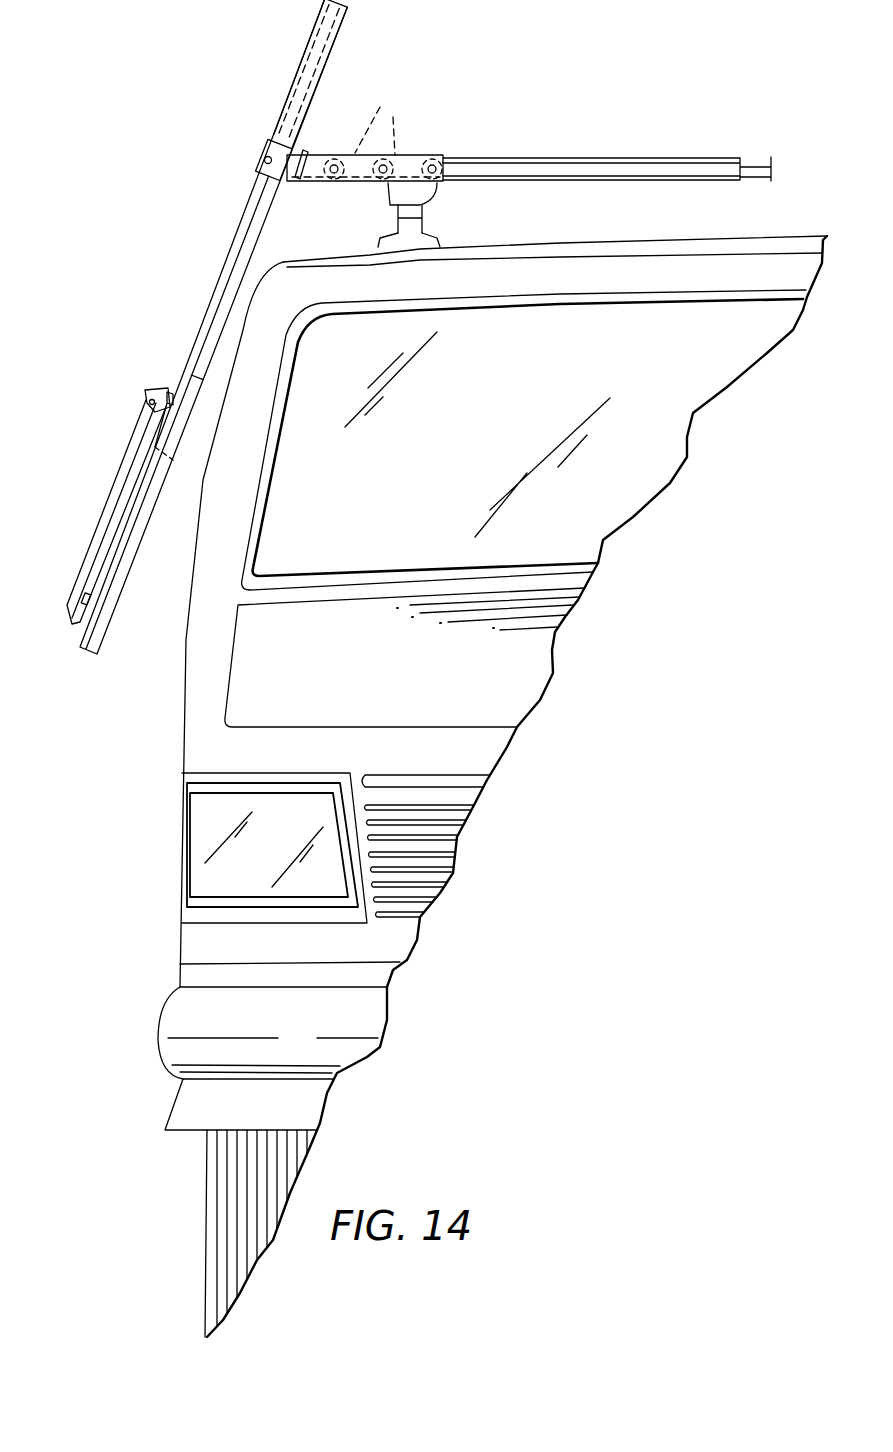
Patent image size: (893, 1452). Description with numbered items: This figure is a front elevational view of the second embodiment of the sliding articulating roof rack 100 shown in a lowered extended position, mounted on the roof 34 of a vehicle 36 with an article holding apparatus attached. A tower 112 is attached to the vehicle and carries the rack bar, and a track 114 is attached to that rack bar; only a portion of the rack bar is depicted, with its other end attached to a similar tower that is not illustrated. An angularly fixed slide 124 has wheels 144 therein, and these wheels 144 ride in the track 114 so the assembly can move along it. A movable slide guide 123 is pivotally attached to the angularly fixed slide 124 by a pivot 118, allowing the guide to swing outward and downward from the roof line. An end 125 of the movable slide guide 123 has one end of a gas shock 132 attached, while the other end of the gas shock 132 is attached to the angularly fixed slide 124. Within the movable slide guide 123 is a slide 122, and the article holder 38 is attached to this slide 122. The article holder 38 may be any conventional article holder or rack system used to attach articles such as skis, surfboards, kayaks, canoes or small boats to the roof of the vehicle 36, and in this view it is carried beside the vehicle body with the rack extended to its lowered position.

The roof 34 is at (552, 243).
The vehicle 36 is at (150, 774).
The article holder 38 is at (90, 542).
The sliding articulating roof rack 100 is at (170, 344).
The tower 112 is at (430, 205).
The track 114 is at (683, 162).
The pivot 118 is at (265, 158).
The slide 122 is at (122, 580).
The movable slide guide 123 is at (213, 292).
The angularly fixed slide 124 is at (415, 155).
The end 125 is at (292, 90).
The gas shock 132 is at (308, 143).
The wheels 144 is at (390, 123).